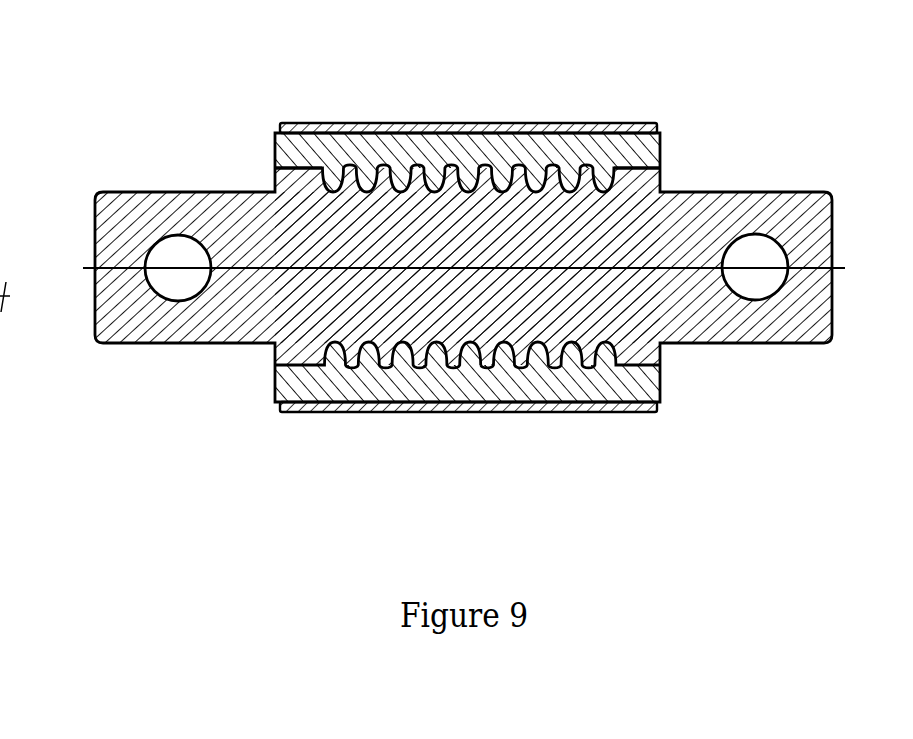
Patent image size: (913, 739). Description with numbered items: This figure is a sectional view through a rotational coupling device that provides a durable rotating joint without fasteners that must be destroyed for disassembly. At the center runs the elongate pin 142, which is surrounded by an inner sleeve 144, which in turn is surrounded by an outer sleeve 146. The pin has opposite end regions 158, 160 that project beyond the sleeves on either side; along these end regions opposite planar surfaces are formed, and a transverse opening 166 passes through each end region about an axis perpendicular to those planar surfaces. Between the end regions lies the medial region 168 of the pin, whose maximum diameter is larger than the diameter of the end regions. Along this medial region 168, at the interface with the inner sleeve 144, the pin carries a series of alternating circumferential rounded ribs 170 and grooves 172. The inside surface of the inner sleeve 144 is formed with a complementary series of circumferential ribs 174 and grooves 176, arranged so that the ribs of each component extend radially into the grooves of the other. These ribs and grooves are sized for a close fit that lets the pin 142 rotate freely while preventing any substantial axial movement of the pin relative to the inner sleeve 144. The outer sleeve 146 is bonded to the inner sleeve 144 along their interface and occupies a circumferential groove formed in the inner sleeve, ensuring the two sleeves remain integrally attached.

The elongate pin 142 is at (203, 198).
The inner sleeve 144 is at (636, 155).
The outer sleeve 146 is at (466, 123).
The end region 158 is at (143, 344).
The end region 160 is at (736, 345).
The transverse opening 166 is at (152, 262).
The medial region 168 is at (306, 182).
The circumferential rounded ribs 170 is at (385, 177).
The grooves 172 is at (612, 166).
The circumferential ribs 174 is at (604, 346).
The grooves 176 is at (353, 352).